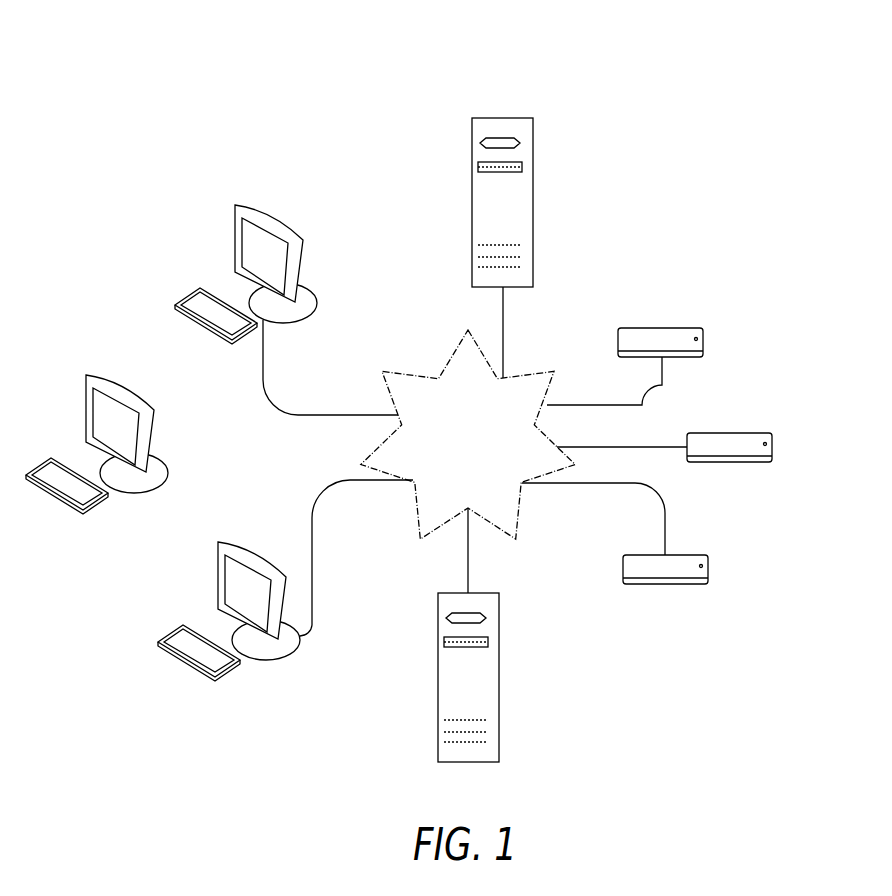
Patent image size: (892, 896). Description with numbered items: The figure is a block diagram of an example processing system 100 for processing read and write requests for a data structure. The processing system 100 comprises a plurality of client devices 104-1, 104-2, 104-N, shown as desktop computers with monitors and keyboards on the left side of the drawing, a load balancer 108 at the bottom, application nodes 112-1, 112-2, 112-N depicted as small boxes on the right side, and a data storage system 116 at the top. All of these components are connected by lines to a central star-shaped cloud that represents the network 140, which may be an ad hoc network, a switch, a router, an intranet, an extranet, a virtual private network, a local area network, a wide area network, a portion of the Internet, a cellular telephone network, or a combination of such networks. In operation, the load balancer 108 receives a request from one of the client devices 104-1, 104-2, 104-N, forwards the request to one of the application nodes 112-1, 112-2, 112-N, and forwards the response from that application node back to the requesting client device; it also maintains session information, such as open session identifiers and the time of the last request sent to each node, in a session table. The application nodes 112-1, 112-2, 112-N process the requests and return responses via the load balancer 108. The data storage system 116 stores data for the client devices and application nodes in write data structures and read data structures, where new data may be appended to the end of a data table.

The processing system 100 is at (614, 50).
The client device 104-1 is at (293, 323).
The client device 104-2 is at (152, 493).
The client device 104-N is at (275, 662).
The load balancer 108 is at (500, 633).
The application node 112-1 is at (680, 358).
The application node 112-2 is at (743, 463).
The application node 112-N is at (685, 585).
The data storage system 116 is at (517, 288).
The network 140 is at (520, 487).